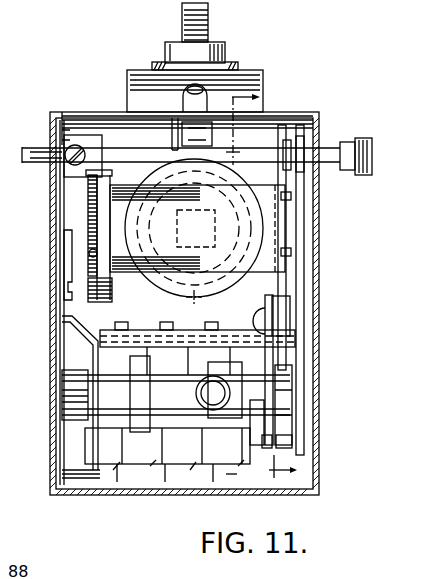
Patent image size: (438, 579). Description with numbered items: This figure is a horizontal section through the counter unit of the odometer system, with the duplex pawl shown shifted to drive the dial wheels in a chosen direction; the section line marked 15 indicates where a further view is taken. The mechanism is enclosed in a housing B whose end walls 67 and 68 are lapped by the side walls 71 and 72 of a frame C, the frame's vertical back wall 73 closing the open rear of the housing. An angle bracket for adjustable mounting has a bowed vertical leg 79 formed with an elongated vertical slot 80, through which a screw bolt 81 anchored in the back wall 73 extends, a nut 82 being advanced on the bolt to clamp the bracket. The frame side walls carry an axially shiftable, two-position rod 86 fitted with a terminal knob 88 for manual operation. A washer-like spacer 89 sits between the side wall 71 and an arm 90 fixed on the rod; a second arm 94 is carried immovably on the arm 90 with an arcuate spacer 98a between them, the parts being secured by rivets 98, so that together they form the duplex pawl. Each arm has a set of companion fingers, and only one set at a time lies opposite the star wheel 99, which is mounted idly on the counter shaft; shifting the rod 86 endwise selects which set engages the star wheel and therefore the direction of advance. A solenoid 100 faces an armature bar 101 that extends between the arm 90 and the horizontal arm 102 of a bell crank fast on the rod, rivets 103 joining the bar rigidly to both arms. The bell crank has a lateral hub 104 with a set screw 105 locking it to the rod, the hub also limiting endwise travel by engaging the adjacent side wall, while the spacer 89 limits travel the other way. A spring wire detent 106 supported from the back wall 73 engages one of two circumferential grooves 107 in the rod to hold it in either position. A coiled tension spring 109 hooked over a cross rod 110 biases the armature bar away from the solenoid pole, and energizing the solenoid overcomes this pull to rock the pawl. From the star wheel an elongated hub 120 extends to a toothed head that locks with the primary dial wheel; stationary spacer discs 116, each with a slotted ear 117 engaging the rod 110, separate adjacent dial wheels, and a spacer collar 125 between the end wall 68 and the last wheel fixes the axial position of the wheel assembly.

The screw bolt 81 is at (206, 23).
The nut 82 is at (225, 46).
The bowed vertical leg 79 is at (262, 70).
The elongated vertical slot 80 is at (190, 90).
The spring wire detent 106 is at (173, 118).
The circumferential grooves 107 is at (180, 143).
The set screw 105 is at (76, 146).
The vertical back wall 73 is at (108, 112).
The hub 104 is at (62, 136).
The frame C is at (294, 111).
The spacer 89 is at (306, 143).
The terminal knob 88 is at (372, 141).
The two-position rod 86 is at (32, 163).
The horizontal arm of bell crank 102 is at (90, 208).
The rivets 103 is at (290, 197).
The frame side wall 72 is at (58, 256).
The housing end wall 68 is at (62, 283).
The rod 110 is at (62, 348).
The spacer collar 125 is at (65, 400).
The coiled tension spring 109 is at (112, 292).
The ear 117 is at (200, 324).
The rivets 98 is at (249, 319).
The arcuate spacer 98a is at (280, 315).
The arm 90 is at (286, 322).
The second arm 94 is at (272, 360).
The star wheel 99 is at (292, 386).
The solenoid 100 is at (228, 184).
The armature bar 101 is at (277, 227).
The frame side wall 71 is at (305, 245).
The housing end wall 67 is at (318, 272).
The elongated hub 120 is at (269, 436).
The stationary spacer disc 116 is at (213, 464).
The section line 15 is at (270, 283).
The housing B is at (326, 454).